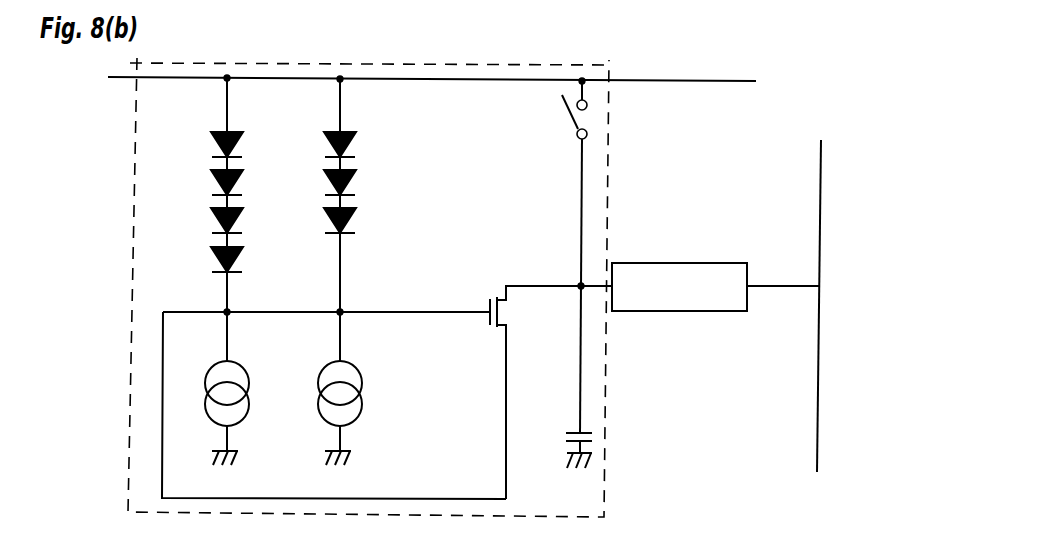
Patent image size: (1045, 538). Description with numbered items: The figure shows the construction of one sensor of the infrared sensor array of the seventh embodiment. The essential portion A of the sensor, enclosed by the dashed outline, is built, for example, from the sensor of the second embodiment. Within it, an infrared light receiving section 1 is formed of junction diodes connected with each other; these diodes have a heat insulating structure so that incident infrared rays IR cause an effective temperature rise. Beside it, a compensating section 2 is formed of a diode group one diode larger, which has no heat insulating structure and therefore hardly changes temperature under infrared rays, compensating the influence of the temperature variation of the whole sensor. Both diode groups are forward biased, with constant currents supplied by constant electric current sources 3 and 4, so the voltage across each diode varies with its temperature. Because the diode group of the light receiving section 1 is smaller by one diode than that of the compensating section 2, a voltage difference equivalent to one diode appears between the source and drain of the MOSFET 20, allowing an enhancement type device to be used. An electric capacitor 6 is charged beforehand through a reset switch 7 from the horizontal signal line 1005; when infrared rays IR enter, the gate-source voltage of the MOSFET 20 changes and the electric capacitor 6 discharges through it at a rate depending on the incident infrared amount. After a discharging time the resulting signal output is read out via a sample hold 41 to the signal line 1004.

The infrared light receiving section 1 is at (365, 172).
The compensating section 2 is at (207, 210).
The constant electric current source 3 is at (368, 385).
The constant electric current source 4 is at (193, 410).
The electric capacitor 6 is at (592, 428).
The reset switch 7 is at (600, 120).
The MOSFET 20 is at (495, 282).
The sample hold 41 is at (642, 278).
The vertical signal line 1004 is at (817, 353).
The horizontal signal line 1005 is at (715, 88).
The essential portion of the sensor A is at (603, 498).
The infrared rays IR is at (362, 217).